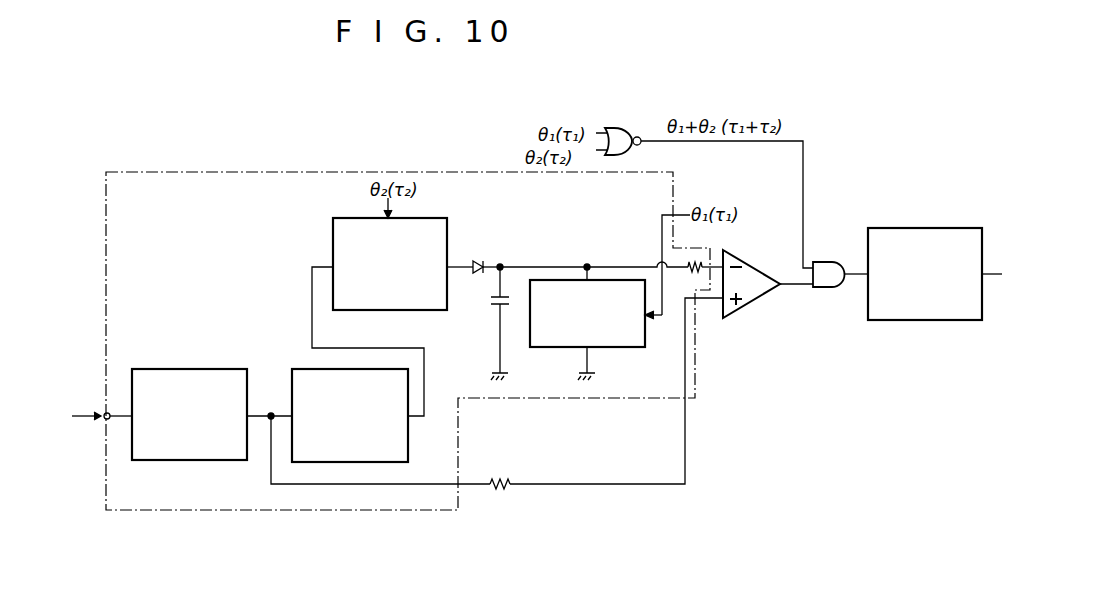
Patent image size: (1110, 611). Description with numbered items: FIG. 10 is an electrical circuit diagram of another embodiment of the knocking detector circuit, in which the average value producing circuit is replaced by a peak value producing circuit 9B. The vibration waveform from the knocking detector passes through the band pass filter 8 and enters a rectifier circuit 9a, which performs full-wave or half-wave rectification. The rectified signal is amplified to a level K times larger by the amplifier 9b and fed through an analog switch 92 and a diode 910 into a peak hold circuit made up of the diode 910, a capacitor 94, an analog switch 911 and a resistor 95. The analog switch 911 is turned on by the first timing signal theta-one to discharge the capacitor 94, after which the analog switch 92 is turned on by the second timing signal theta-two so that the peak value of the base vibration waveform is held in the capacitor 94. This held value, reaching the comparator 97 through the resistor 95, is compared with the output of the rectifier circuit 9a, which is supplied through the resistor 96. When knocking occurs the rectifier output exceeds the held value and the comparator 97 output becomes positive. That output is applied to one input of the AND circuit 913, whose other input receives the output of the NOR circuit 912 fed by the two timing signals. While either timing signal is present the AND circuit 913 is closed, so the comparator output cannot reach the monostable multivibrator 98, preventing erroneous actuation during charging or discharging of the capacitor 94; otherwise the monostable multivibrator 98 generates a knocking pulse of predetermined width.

The band pass filter 8 is at (92, 416).
The rectifier circuit 9a is at (158, 369).
The amplifier 9b is at (292, 380).
The peak value producing circuit 9B is at (402, 172).
The analog switch 92 is at (408, 310).
The capacitor 94 is at (491, 301).
The resistor 95 is at (694, 262).
The resistor 96 is at (506, 483).
The comparator 97 is at (741, 314).
The monostable multivibrator 98 is at (934, 320).
The diode 910 is at (477, 262).
The analog switch 911 is at (645, 343).
The NOR circuit 912 is at (634, 149).
The AND circuit 913 is at (829, 288).